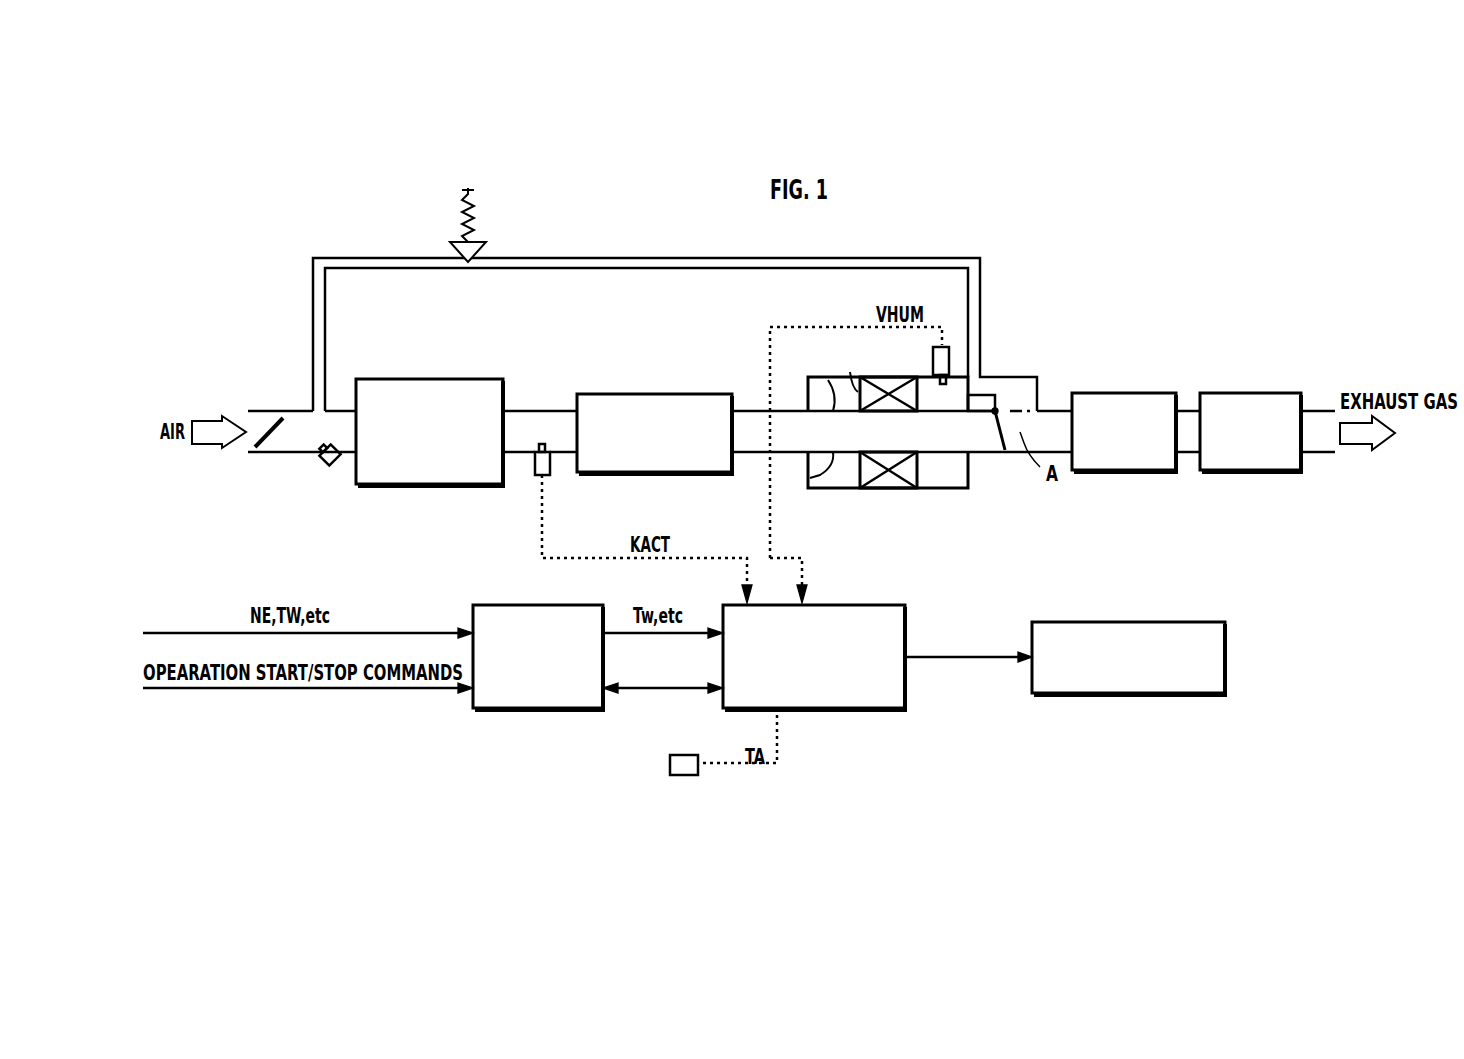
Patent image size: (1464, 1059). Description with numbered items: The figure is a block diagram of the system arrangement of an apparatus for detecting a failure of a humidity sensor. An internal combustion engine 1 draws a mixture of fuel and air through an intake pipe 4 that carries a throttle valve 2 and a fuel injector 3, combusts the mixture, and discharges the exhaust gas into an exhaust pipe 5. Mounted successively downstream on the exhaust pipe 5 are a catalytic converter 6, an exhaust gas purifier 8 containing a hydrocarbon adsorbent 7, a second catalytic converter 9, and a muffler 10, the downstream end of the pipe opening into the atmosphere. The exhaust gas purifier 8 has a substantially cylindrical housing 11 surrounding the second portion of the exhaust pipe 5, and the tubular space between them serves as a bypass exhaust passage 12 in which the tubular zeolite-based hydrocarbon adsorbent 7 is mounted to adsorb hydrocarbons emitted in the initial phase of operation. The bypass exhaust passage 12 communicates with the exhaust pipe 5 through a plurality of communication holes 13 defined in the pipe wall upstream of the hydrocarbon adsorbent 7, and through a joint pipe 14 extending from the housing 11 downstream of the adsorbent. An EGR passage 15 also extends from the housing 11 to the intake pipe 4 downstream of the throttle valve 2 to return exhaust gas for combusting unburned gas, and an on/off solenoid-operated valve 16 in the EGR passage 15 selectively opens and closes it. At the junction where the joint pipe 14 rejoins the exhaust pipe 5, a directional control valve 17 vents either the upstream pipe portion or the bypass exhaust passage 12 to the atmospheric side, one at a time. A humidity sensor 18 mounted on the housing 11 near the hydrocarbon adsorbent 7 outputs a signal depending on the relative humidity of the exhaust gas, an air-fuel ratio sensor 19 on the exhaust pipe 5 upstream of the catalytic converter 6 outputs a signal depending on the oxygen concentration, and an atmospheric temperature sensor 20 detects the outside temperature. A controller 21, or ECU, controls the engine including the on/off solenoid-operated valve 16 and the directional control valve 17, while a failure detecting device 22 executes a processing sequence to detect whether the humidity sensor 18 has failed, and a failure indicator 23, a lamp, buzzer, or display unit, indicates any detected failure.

The internal combustion engine 1 is at (438, 380).
The throttle valve 2 is at (266, 452).
The fuel injector 3 is at (332, 466).
The intake pipe 4 is at (268, 410).
The exhaust pipe 5 is at (520, 410).
The catalytic converter 6 is at (682, 394).
The hydrocarbon adsorbent 7 is at (848, 372).
The exhaust gas purifier 8 is at (874, 455).
The catalytic converter 9 is at (1128, 393).
The muffler 10 is at (1250, 393).
The housing 11 is at (850, 488).
The bypass exhaust passage 12 is at (828, 488).
The communication holes 13 is at (828, 380).
The joint pipe 14 is at (997, 373).
The EGR passage 15 is at (626, 258).
The on/off solenoid-operated valve 16 is at (480, 242).
The directional control valve 17 is at (1012, 412).
The humidity sensor 18 is at (933, 361).
The air-fuel ratio sensor 19 is at (552, 468).
The atmospheric temperature sensor 20 is at (686, 755).
The controller 21 is at (555, 710).
The failure detecting device 22 is at (838, 710).
The failure indicator 23 is at (1147, 695).